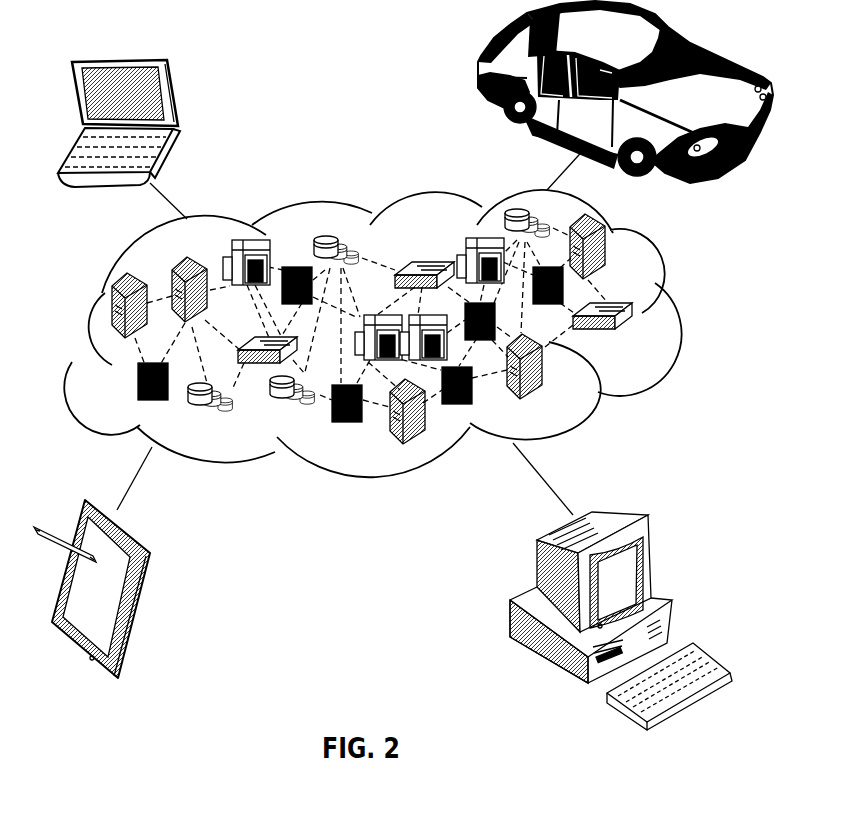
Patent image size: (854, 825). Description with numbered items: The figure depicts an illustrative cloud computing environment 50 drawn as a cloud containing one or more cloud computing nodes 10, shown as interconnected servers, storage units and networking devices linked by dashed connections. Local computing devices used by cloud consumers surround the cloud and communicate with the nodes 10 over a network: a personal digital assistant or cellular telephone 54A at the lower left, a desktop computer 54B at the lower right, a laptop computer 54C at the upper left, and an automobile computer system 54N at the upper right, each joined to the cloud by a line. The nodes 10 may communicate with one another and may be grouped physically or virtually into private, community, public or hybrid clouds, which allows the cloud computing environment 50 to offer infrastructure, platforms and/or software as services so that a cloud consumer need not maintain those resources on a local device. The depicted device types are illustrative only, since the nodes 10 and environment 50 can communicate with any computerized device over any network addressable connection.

The cloud computing environment 50 is at (678, 313).
The cloud computing nodes 10 is at (637, 338).
The personal digital assistant (PDA) or cellular telephone 54A is at (145, 583).
The desktop computer 54B is at (625, 512).
The laptop computer 54C is at (177, 98).
The automobile computer system 54N is at (478, 70).